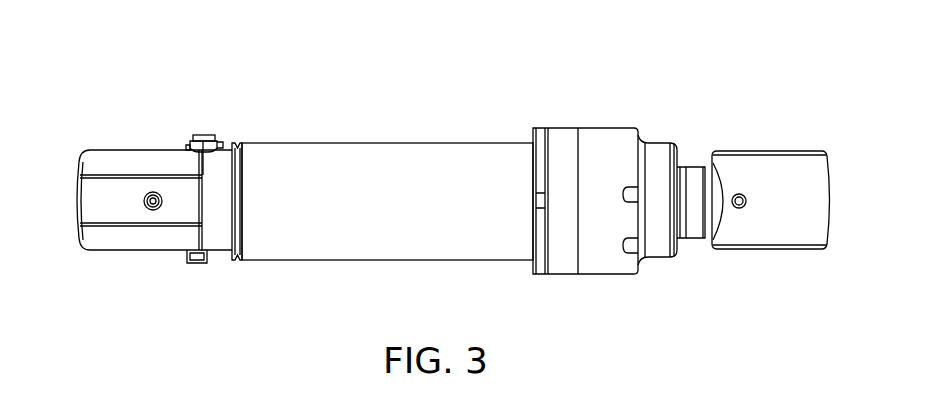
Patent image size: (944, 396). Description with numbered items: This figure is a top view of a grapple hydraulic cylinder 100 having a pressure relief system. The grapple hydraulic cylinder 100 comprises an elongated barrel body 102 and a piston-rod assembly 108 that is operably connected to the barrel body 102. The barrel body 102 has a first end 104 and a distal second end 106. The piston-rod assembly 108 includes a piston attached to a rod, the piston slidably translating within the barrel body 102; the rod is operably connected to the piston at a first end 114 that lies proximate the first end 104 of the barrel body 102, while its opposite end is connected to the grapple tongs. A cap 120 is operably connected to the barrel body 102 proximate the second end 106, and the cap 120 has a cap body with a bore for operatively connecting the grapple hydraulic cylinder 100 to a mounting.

The grapple hydraulic cylinder 100 is at (194, 283).
The barrel body 102 is at (391, 213).
The first end 104 is at (595, 152).
The second end 106 is at (247, 262).
The piston-rod assembly 108 is at (833, 182).
The first end 114 is at (810, 216).
The cap 120 is at (65, 190).